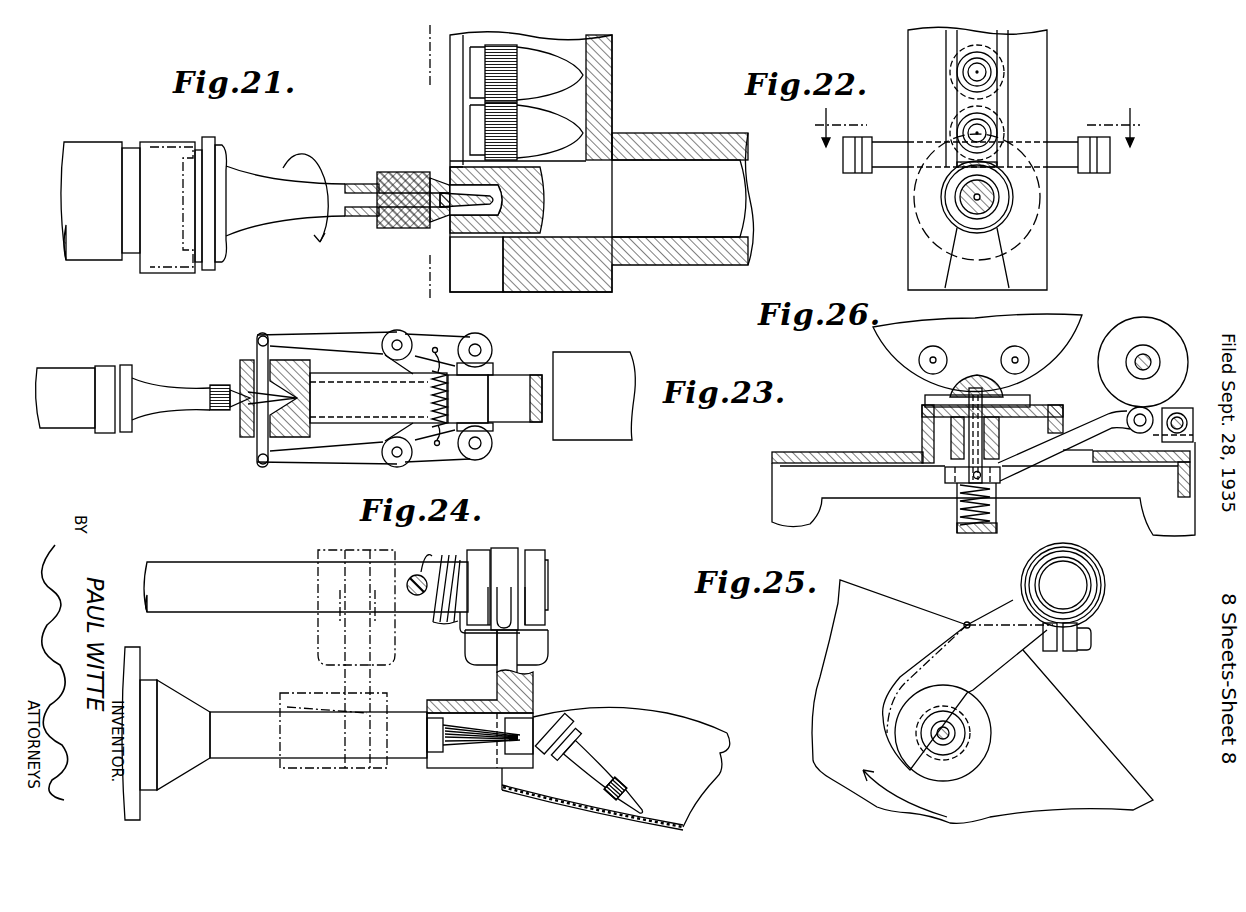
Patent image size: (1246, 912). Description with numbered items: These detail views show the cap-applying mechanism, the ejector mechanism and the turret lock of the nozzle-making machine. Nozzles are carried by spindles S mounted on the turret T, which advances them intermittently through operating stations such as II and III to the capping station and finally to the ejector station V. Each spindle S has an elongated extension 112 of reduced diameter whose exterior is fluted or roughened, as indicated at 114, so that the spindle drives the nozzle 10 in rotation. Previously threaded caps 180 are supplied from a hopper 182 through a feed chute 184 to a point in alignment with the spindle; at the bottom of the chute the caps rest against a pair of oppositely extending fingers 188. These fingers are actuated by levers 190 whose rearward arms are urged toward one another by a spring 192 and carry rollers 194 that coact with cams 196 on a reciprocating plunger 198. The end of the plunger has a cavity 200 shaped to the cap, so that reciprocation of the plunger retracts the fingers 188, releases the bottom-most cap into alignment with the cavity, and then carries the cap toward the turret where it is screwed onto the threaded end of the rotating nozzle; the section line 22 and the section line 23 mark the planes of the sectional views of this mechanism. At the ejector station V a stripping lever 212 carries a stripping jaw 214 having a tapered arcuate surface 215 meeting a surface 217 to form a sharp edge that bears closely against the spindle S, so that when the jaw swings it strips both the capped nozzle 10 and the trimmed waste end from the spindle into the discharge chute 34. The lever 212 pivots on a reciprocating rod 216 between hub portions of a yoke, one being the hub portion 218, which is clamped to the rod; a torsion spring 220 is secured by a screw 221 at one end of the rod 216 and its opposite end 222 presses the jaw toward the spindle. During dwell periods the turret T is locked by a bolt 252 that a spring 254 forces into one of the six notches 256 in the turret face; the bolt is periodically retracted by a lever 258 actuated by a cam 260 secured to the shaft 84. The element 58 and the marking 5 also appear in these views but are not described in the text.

In FIG. 21, the nozzle 10 is at (302, 198).
In FIG. 23, the nozzle 10 is at (157, 393).
In FIG. 24, the nozzle 10 is at (602, 775).
In FIG. 21, the section line 22 is at (442, 48).
In FIG. 22, the section line 23 is at (977, 127).
In FIG. 24, the discharge chute 34 is at (616, 781).
In FIG. 26, the frame 58 is at (848, 452).
In FIG. 26, the shaft 84 is at (1139, 354).
In FIG. 24, the elongated extension 112 is at (492, 712).
In FIG. 24, the flutes or roughened portions 114 is at (478, 745).
In FIG. 21, the cap 180 is at (413, 170).
In FIG. 22, the cap 180 is at (990, 70).
In FIG. 23, the cap 180 is at (222, 410).
In FIG. 24, the cap 180 is at (641, 802).
In FIG. 22, the hopper 182 is at (988, 128).
In FIG. 21, the feed chute 184 is at (612, 72).
In FIG. 22, the feed chute 184 is at (1047, 38).
In FIG. 22, the fingers 188 is at (893, 168).
In FIG. 23, the fingers 188 is at (258, 350).
In FIG. 23, the levers 190 is at (342, 333).
In FIG. 23, the spring 192 is at (428, 392).
In FIG. 23, the rollers 194 is at (490, 340).
In FIG. 23, the cams 196 is at (483, 378).
In FIG. 21, the reciprocating plunger 198 is at (683, 199).
In FIG. 23, the reciprocating plunger 198 is at (561, 396).
In FIG. 21, the cavity 200 is at (540, 198).
In FIG. 24, the lever 212 is at (510, 645).
In FIG. 25, the lever 212 is at (1003, 602).
In FIG. 24, the stripping jaw 214 is at (443, 763).
In FIG. 25, the stripping jaw 214 is at (960, 705).
In FIG. 24, the tapered arcuate surface 215 is at (520, 745).
In FIG. 24, the reciprocating rod 216 is at (306, 587).
In FIG. 25, the reciprocating rod 216 is at (1063, 585).
In FIG. 24, the surface 217 is at (533, 717).
In FIG. 24, the hub portion 218 is at (479, 558).
In FIG. 25, the hub portion 218 is at (1085, 655).
In FIG. 24, the torsion spring 220 is at (444, 565).
In FIG. 24, the screw 221 is at (414, 575).
In FIG. 24, the opposite end 222 is at (480, 633).
In FIG. 25, the opposite end 222 is at (969, 622).
In FIG. 26, the bolt 252 is at (968, 401).
In FIG. 26, the spring 254 is at (1000, 486).
In FIG. 26, the notches 256 is at (950, 382).
In FIG. 26, the lever 258 is at (1087, 427).
In FIG. 26, the cam 260 is at (1120, 333).
In FIG. 26, the position marker 5 is at (990, 358).
In FIG. 21, the spindle S is at (144, 205).
In FIG. 23, the spindle S is at (84, 399).
In FIG. 24, the spindle S is at (274, 733).
In FIG. 25, the spindle S is at (970, 742).
In FIG. 25, the turret T is at (1097, 718).
In FIG. 26, the turret T is at (890, 353).
In FIG. 24, the ejector station V is at (337, 645).
In FIG. 26, the operating station II is at (933, 349).
In FIG. 26, the operating station III is at (1015, 349).